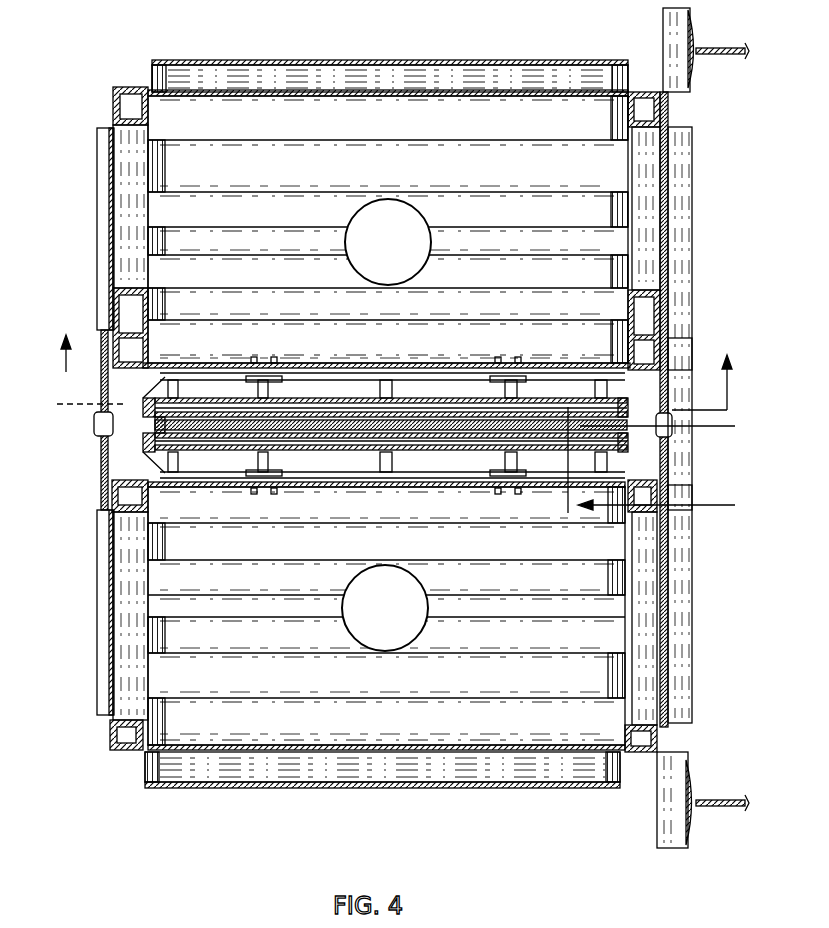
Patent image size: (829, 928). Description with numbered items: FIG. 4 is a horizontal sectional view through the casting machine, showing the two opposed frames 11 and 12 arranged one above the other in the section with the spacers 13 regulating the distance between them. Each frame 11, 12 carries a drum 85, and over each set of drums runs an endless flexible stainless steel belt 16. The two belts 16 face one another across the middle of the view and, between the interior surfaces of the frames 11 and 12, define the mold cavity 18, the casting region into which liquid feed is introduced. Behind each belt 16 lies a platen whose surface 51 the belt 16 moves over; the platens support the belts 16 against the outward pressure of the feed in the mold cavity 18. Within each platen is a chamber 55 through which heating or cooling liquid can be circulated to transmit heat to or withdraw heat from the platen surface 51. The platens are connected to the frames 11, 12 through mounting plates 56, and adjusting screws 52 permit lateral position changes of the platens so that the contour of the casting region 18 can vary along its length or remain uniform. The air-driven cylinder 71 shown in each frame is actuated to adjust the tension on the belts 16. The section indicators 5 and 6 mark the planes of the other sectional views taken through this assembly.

The section line 5- 5 is at (658, 462).
The section line 6- 6 is at (393, 362).
The frame 11 is at (116, 96).
The frame 12 is at (108, 738).
The spacer 13 is at (98, 431).
The endless flexible stainless steel belt 16 is at (415, 60).
The mold cavity 18 is at (436, 424).
The platen surface 51 is at (221, 410).
The adjusting screw 52 is at (576, 386).
The chamber 55 is at (321, 433).
The mounting plate 56 is at (280, 386).
The air-driven cylinder 71 is at (405, 220).
The drum 85 is at (537, 78).